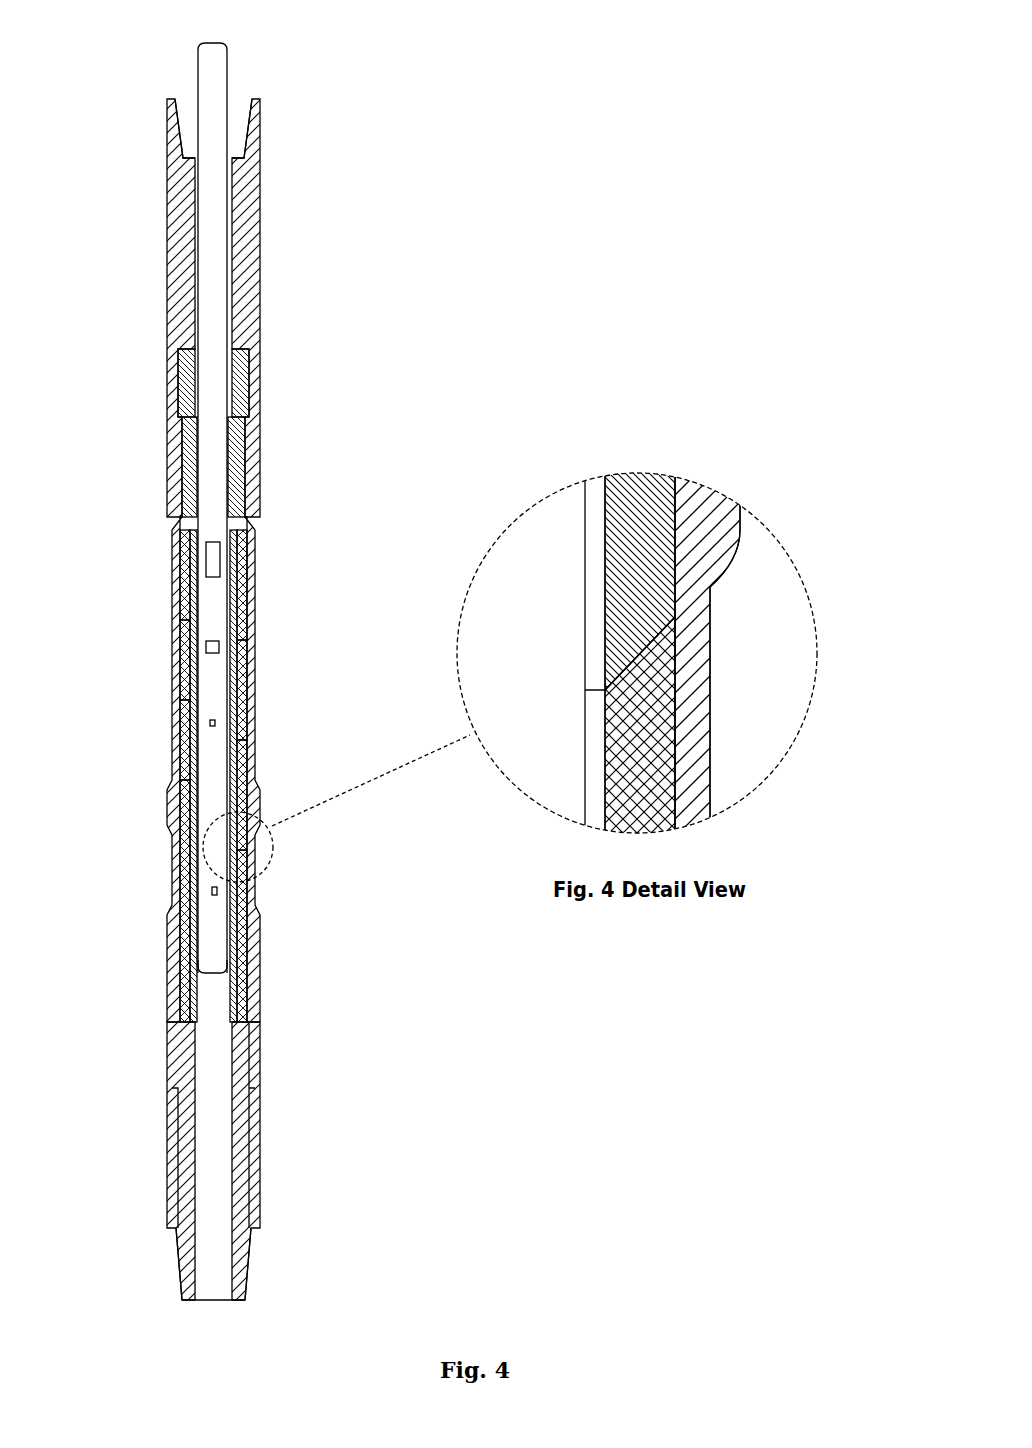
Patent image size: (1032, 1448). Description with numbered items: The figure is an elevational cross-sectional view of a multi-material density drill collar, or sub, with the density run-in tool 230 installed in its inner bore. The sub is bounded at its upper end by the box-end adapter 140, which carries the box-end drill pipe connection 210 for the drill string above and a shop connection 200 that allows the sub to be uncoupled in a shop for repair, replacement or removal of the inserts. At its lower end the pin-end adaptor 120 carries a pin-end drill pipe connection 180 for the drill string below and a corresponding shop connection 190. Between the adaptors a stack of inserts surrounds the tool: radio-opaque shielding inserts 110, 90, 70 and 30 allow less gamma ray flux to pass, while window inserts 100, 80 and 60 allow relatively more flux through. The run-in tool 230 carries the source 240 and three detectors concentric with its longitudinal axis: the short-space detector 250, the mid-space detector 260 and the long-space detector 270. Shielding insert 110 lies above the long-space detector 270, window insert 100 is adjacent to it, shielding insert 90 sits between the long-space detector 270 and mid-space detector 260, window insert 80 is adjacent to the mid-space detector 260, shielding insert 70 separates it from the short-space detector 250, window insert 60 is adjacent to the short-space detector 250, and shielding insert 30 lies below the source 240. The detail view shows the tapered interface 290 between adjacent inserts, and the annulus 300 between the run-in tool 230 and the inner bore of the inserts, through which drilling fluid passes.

The density run-in tool 230 is at (222, 48).
The box-end drill pipe connection 210 is at (258, 132).
The box-end adapter 140 is at (170, 258).
The shop connection 200 is at (162, 380).
The shielding insert 110 is at (248, 470).
The window insert 100 is at (180, 565).
The long-space detector 270 is at (228, 562).
The shielding insert 90 is at (248, 610).
The window insert 80 is at (182, 648).
The mid-space detector 260 is at (227, 648).
The shielding insert 70 is at (250, 705).
The window insert 60 is at (182, 735).
The short-space detector 250 is at (224, 725).
The source 240 is at (226, 890).
The shielding insert 30 is at (250, 975).
The shop connection 190 is at (162, 1053).
The pin-end adaptor 120 is at (178, 1170).
The pin-end drill pipe connection 180 is at (258, 1262).
The tapered interface 290 is at (675, 648).
The annulus 300 is at (597, 785).